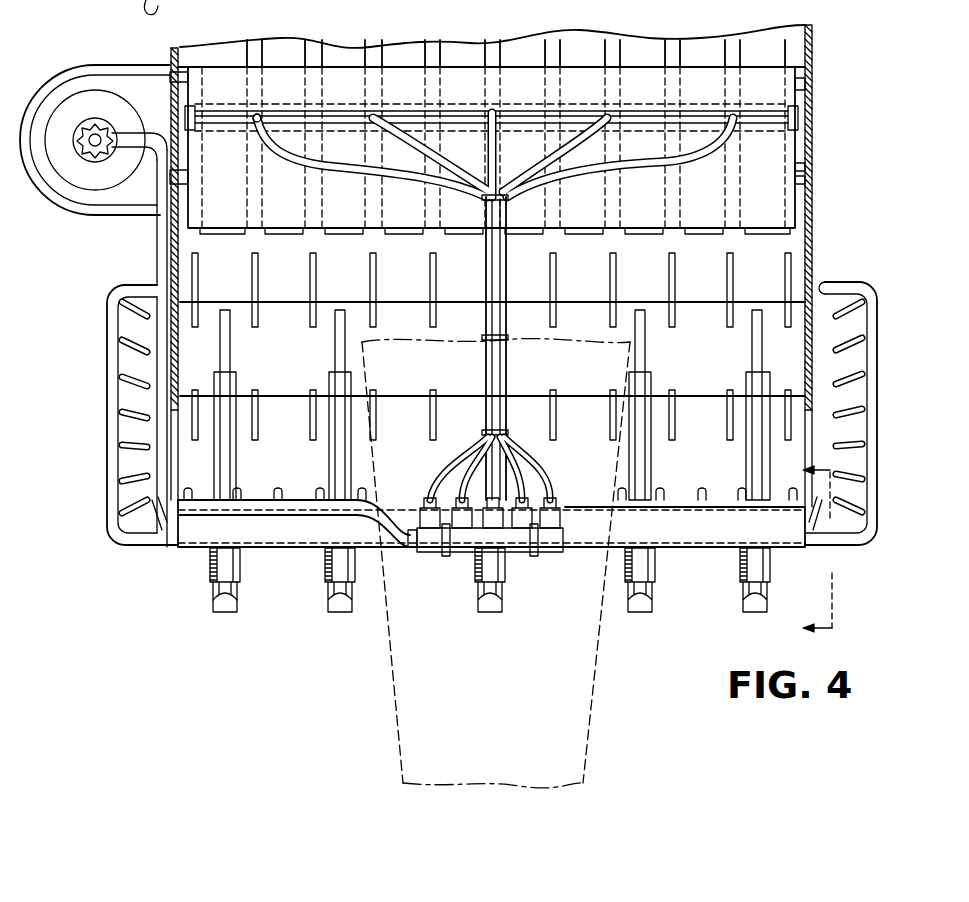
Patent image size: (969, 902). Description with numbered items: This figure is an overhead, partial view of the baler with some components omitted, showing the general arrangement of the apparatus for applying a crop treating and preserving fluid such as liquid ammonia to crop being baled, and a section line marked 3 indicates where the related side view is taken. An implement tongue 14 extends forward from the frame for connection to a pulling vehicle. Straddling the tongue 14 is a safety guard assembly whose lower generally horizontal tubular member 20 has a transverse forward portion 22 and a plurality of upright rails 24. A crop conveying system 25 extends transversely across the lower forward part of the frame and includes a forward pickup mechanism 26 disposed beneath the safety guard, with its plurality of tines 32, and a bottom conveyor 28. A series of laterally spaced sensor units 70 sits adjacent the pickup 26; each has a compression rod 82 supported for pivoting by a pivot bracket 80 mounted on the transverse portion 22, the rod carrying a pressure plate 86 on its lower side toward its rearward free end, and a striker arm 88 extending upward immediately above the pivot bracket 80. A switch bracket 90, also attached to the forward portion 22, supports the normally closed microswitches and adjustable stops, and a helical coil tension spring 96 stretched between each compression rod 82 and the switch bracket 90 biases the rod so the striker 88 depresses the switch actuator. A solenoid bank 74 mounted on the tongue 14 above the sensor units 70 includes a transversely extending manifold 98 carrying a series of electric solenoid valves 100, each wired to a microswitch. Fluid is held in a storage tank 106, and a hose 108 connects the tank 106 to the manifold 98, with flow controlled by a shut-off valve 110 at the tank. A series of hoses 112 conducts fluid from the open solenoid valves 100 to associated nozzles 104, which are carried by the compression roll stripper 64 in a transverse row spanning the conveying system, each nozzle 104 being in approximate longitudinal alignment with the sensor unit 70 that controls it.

The implement tongue 14 is at (600, 666).
The lower generally horizontal tubular member 20 is at (107, 429).
The transverse forward portion 22 is at (826, 538).
The upright rails 24 is at (851, 456).
The crop conveying system 25 is at (818, 165).
The forward pickup mechanism 26 is at (697, 397).
The bottom conveyor 28 is at (797, 194).
The tines 32 is at (305, 431).
The compression roll stripper 64 is at (798, 117).
The sensor unit 70 is at (441, 605).
The solenoid bank 74 is at (427, 494).
The pivot bracket 80 is at (241, 553).
The compression rod 82 is at (239, 591).
The pressure plate 86 is at (215, 589).
The striker arm 88 is at (482, 581).
The switch bracket 90 is at (705, 548).
The helical coil tension spring 96 is at (208, 560).
The manifold 98 is at (548, 520).
The electric solenoid valves 100 is at (545, 553).
The nozzles 104 is at (262, 107).
The storage tank 106 is at (58, 183).
The hose 108 is at (163, 256).
The shut-off valve 110 is at (108, 169).
The hoses 112 is at (405, 124).
The section line 3- 3 is at (807, 550).